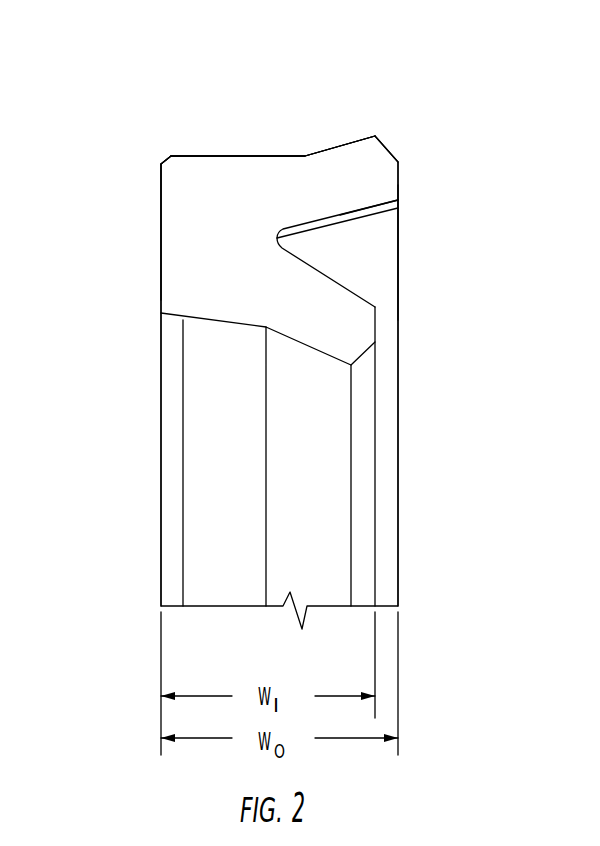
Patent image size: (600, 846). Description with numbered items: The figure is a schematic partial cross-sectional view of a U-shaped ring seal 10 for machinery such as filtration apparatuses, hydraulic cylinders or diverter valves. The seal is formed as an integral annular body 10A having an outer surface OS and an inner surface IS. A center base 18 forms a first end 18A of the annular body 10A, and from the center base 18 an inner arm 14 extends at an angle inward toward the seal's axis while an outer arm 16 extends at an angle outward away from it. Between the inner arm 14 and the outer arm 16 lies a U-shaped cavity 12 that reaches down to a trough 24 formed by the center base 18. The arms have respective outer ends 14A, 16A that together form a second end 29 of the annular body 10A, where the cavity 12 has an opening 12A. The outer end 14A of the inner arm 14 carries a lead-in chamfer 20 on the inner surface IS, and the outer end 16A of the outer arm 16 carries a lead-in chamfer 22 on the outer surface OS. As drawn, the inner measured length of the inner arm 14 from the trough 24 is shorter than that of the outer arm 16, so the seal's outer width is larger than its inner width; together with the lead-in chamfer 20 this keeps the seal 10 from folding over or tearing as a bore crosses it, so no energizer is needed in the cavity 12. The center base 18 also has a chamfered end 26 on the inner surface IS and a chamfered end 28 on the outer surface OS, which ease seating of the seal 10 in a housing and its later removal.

The seal 10 is at (129, 344).
The integral annular body 10A is at (161, 450).
The cavity 12 is at (355, 282).
The opening 12A is at (400, 242).
The inner arm 14 is at (322, 353).
The outer end of inner arm 14A is at (377, 335).
The outer arm 16 is at (332, 145).
The outer end of outer arm 16A is at (400, 178).
The center base 18 is at (223, 156).
The first end 18A is at (161, 282).
The lead-in chamfer 20 is at (367, 353).
The lead-in chamfer 22 is at (387, 145).
The trough 24 is at (399, 206).
The chamfered end 26 is at (183, 320).
The chamfered end 28 is at (165, 156).
The second end 29 is at (376, 333).
The outer surface OS is at (252, 156).
The inner surface IS is at (257, 328).